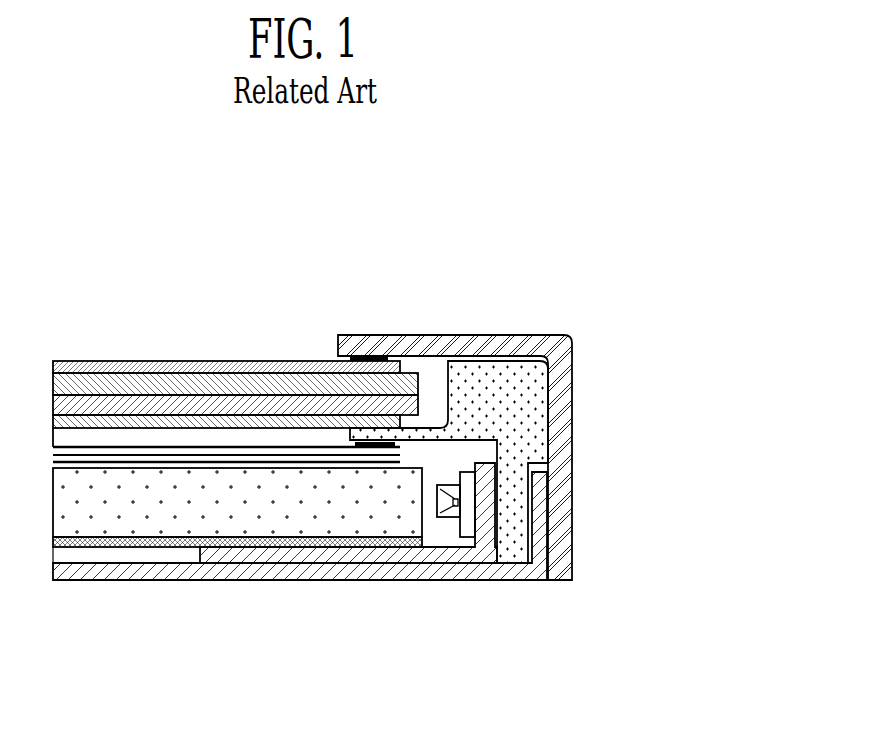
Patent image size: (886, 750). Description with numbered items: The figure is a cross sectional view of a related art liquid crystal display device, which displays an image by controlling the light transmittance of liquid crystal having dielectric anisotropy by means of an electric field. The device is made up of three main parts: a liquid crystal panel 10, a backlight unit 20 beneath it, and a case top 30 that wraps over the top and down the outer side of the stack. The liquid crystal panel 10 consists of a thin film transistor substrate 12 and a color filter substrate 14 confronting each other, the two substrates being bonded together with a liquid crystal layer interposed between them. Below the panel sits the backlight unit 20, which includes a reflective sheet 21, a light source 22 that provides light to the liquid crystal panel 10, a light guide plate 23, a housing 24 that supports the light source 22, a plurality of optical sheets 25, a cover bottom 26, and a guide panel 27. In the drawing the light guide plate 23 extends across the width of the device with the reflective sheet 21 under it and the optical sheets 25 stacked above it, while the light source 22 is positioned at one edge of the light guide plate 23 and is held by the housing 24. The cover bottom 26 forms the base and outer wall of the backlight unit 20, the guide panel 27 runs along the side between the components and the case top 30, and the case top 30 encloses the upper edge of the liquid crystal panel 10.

The liquid crystal panel 10 is at (235, 336).
The thin film transistor substrate 12 is at (243, 408).
The color filter substrate 14 is at (203, 385).
The backlight unit 20 is at (300, 533).
The reflective sheet 21 is at (177, 547).
The light source 22 is at (446, 564).
The light guide plate 23 is at (237, 527).
The housing 24 is at (312, 555).
The optical sheets 25 is at (113, 453).
The cover bottom 26 is at (357, 576).
The guide panel 27 is at (510, 543).
The case top 30 is at (440, 348).